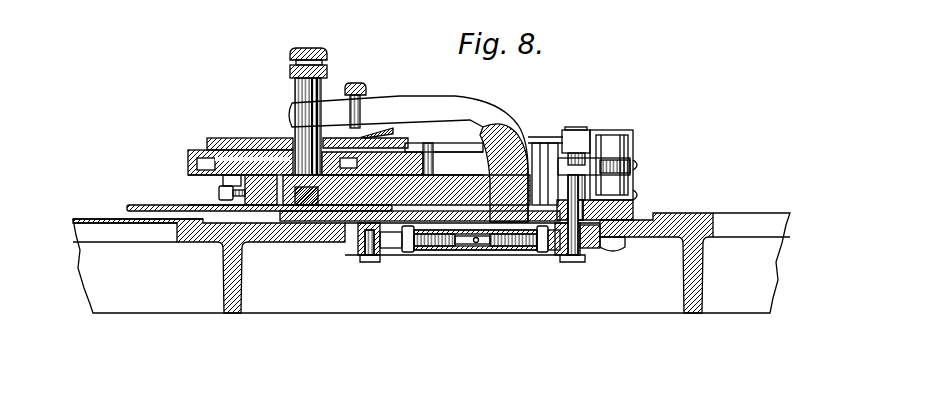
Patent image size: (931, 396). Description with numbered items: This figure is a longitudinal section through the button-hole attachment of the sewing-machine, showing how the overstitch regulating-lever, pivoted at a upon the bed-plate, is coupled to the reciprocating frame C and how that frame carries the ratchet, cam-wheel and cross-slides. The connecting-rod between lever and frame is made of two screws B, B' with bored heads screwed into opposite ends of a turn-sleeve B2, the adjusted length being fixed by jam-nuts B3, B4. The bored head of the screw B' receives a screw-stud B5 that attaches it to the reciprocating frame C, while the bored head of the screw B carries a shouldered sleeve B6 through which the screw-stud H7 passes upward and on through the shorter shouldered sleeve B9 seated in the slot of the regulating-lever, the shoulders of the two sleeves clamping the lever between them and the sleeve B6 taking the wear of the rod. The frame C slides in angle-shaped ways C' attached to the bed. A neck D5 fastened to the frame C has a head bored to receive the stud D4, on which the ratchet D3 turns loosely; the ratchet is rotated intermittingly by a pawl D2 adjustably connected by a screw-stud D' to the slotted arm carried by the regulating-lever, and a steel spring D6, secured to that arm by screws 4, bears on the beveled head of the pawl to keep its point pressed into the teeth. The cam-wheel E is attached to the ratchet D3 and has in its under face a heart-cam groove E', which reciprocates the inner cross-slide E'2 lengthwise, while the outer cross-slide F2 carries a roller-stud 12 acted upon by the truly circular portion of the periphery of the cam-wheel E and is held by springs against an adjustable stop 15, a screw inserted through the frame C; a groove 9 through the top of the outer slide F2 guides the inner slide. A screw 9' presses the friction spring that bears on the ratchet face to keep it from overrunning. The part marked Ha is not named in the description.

The pivot a is at (252, 201).
The reciprocating frame C is at (209, 266).
The ways C' is at (140, 246).
The frame plate Ha is at (622, 250).
The outer cross-slide F2 is at (345, 228).
The cam-wheel E is at (221, 162).
The heart-cam groove E' is at (204, 188).
The inner cross-slide E'2 is at (407, 243).
The adjustable stop 15 is at (219, 194).
The ratchet D3 is at (250, 134).
The stud D4 is at (292, 134).
The neck D5 is at (408, 159).
The pawl D2 is at (542, 130).
The screw-stud D' is at (576, 132).
The steel spring D6 is at (633, 131).
The roller-stud 12 is at (437, 160).
The groove 9 is at (377, 112).
The screw 9' is at (355, 96).
The screws 4 is at (642, 176).
The shorter shouldered sleeve B9 is at (583, 200).
The screw-stud H7 is at (585, 263).
The screw B is at (554, 261).
The screw B' is at (391, 261).
The turn-sleeve B2 is at (513, 253).
The jam-nut B3 is at (544, 253).
The jam-nut B4 is at (410, 253).
The screw-stud B5 is at (372, 263).
The shouldered sleeve B6 is at (593, 253).